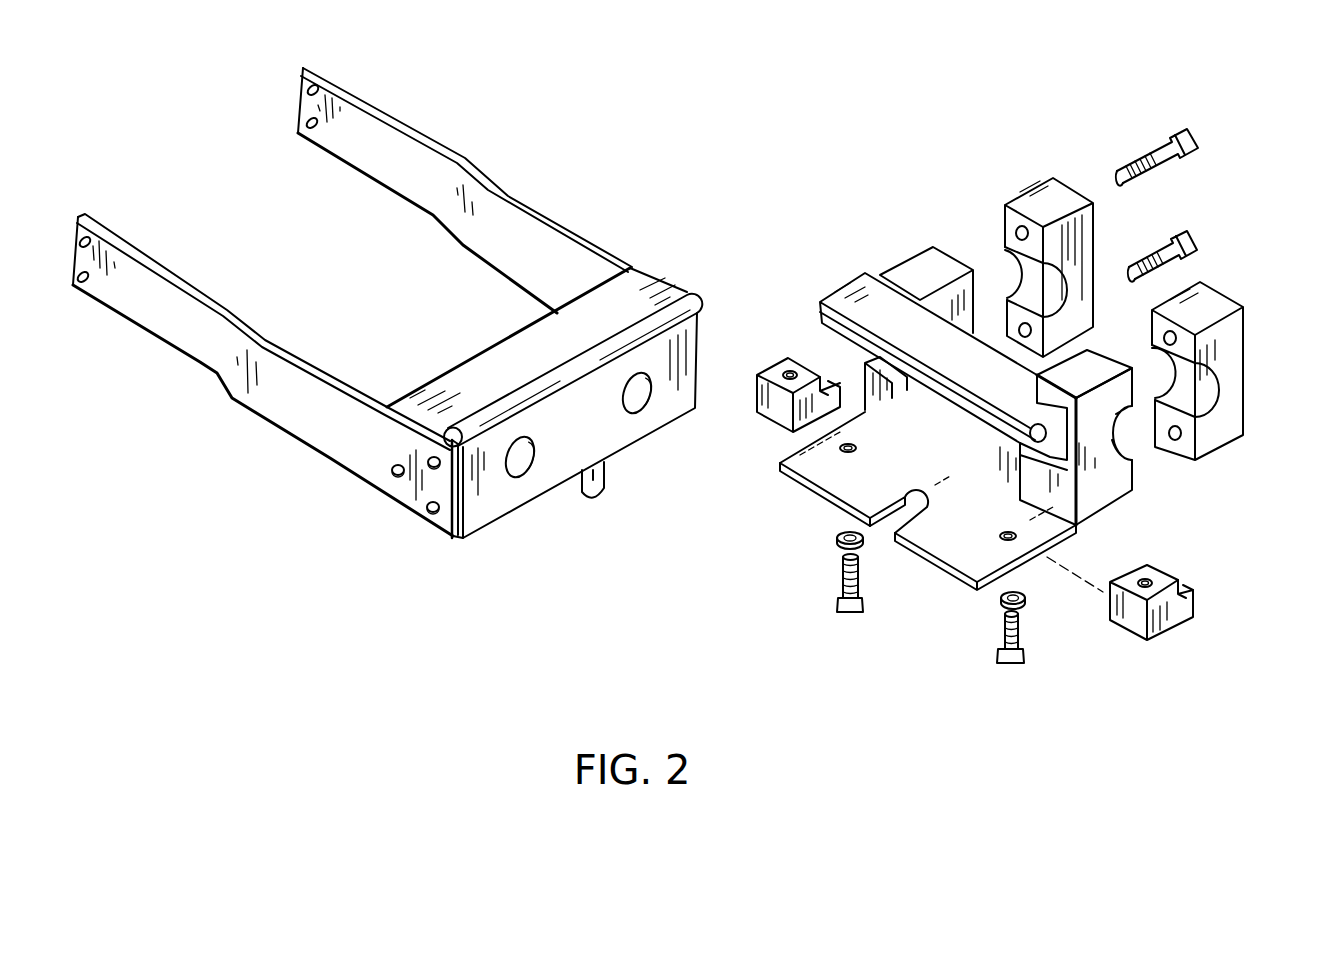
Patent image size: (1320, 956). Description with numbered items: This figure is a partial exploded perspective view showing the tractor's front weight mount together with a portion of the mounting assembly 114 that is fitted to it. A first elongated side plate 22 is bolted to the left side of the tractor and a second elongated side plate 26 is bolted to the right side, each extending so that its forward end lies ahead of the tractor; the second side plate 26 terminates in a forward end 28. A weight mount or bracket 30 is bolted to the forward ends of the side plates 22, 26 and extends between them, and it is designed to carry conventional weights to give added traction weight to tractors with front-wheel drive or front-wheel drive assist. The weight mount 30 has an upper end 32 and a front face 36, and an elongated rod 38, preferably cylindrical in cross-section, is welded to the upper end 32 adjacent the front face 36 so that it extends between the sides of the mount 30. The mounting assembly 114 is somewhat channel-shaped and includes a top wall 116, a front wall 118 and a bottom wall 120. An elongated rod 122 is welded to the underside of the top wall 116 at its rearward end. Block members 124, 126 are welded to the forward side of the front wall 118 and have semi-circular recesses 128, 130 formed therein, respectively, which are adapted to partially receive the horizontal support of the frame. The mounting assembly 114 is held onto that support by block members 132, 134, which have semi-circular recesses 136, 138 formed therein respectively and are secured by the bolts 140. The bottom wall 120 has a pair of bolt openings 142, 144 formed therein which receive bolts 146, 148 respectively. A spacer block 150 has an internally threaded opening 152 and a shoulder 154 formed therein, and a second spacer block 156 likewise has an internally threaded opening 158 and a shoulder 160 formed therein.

The first elongated side plate 22 is at (498, 194).
The second elongated side plate 26 is at (305, 442).
The forward end 28 is at (455, 495).
The weight mount 30 is at (564, 398).
The upper end 32 is at (485, 362).
The front face 36 is at (560, 460).
The elongated rod 38 is at (703, 296).
The mounting assembly 114 is at (878, 250).
The top wall 116 is at (845, 303).
The front wall 118 is at (935, 509).
The bottom wall 120 is at (899, 540).
The elongated rod 122 is at (990, 425).
The block member 124 is at (930, 262).
The block member 126 is at (1182, 446).
The semi-circular recess 128 is at (1059, 249).
The semi-circular recess 130 is at (1125, 440).
The block member 132 is at (1073, 237).
The block member 134 is at (1224, 364).
The semi-circular recess 136 is at (1112, 283).
The semi-circular recess 138 is at (1200, 397).
The bolts 140 is at (1165, 140).
The bolt opening 142 is at (845, 452).
The bolt opening 144 is at (1000, 540).
The bolt 146 is at (850, 572).
The bolt 148 is at (1010, 663).
The spacer block 150 is at (705, 386).
The internally threaded opening 152 is at (785, 373).
The shoulder 154 is at (830, 390).
The spacer block 156 is at (1165, 626).
The internally threaded opening 158 is at (1150, 577).
The shoulder 160 is at (1190, 590).